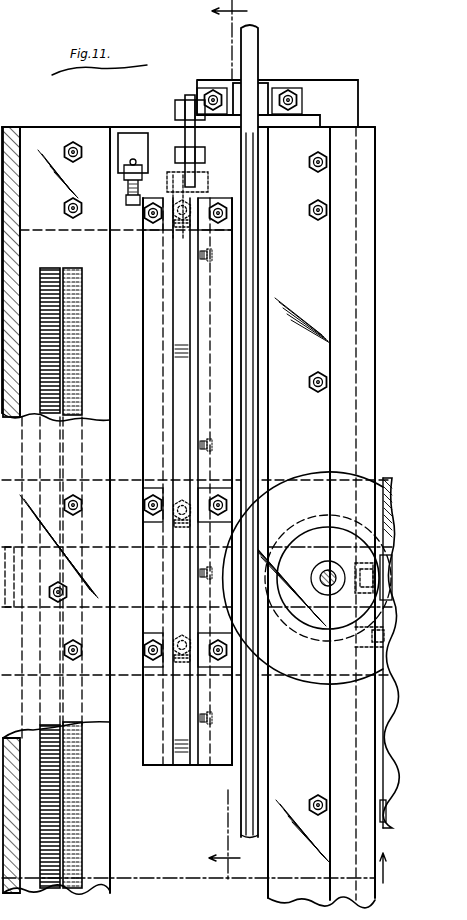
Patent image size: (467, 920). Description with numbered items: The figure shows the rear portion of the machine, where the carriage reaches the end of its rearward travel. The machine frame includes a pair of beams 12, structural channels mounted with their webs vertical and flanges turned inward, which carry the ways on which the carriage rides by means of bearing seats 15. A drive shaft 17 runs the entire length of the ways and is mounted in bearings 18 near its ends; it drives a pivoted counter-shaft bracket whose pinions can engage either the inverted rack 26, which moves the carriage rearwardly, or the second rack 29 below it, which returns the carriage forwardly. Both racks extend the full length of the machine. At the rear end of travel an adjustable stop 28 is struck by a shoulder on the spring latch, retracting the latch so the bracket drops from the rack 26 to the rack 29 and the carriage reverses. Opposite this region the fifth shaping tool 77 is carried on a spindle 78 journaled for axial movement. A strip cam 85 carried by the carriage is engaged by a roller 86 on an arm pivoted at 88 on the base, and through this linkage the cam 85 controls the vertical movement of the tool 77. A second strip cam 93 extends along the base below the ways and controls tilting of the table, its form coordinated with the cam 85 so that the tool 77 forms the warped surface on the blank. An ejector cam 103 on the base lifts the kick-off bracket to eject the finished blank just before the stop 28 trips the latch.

The beams 12 is at (384, 883).
The bearing seats 15 is at (235, 440).
The drive shaft 17 is at (255, 62).
The bearings 18 is at (258, 98).
The inverted rack 26 is at (72, 358).
The adjustable stop 28 is at (125, 200).
The second rack 29 is at (50, 268).
The fifth shaping tool 77 is at (312, 680).
The spindle 78 is at (317, 578).
The strip cam 85 is at (388, 712).
The roller 86 is at (352, 545).
The pivot 88 is at (380, 638).
The strip cam 93 is at (182, 760).
The ejector cam 103 is at (198, 180).